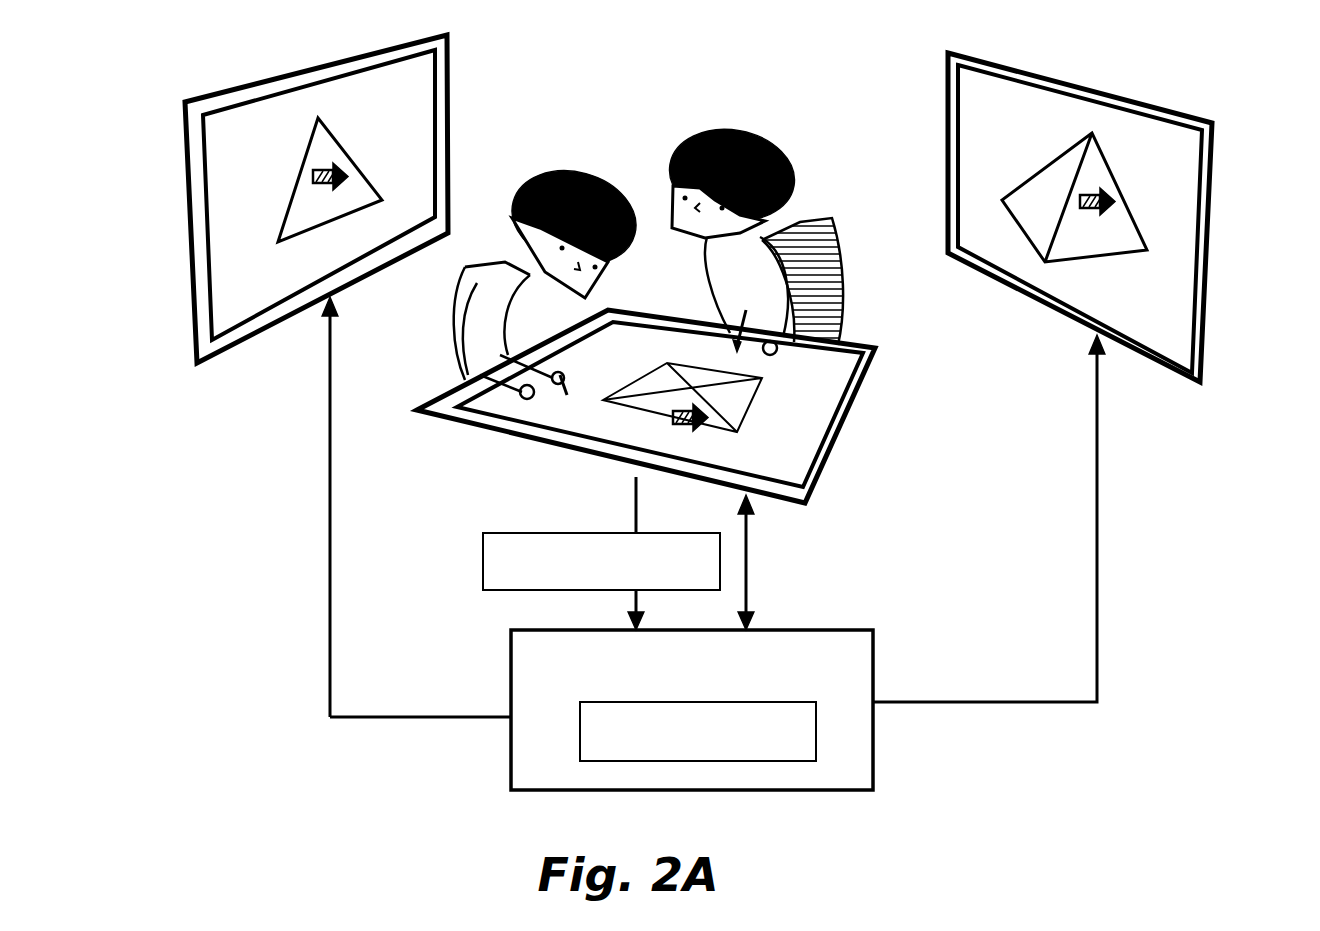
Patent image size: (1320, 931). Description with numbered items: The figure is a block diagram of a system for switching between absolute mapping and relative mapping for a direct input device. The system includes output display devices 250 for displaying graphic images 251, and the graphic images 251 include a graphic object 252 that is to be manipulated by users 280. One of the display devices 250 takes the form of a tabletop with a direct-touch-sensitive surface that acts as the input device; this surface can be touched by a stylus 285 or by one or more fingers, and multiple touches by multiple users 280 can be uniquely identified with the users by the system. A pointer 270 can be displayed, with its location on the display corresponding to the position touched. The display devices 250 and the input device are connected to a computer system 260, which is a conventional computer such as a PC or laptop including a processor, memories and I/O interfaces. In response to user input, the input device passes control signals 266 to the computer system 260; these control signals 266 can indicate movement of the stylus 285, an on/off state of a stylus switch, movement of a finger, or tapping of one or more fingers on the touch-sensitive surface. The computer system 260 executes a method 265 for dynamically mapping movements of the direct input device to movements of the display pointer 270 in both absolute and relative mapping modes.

The output display device 250 is at (190, 183).
The graphic image 251 is at (210, 293).
The graphic object 252 is at (302, 176).
The pointer 270 is at (343, 190).
The users 280 is at (554, 175).
The stylus 285 is at (747, 307).
The control signals 266 is at (483, 562).
The method 265 is at (816, 718).
The computer system 260 is at (812, 792).